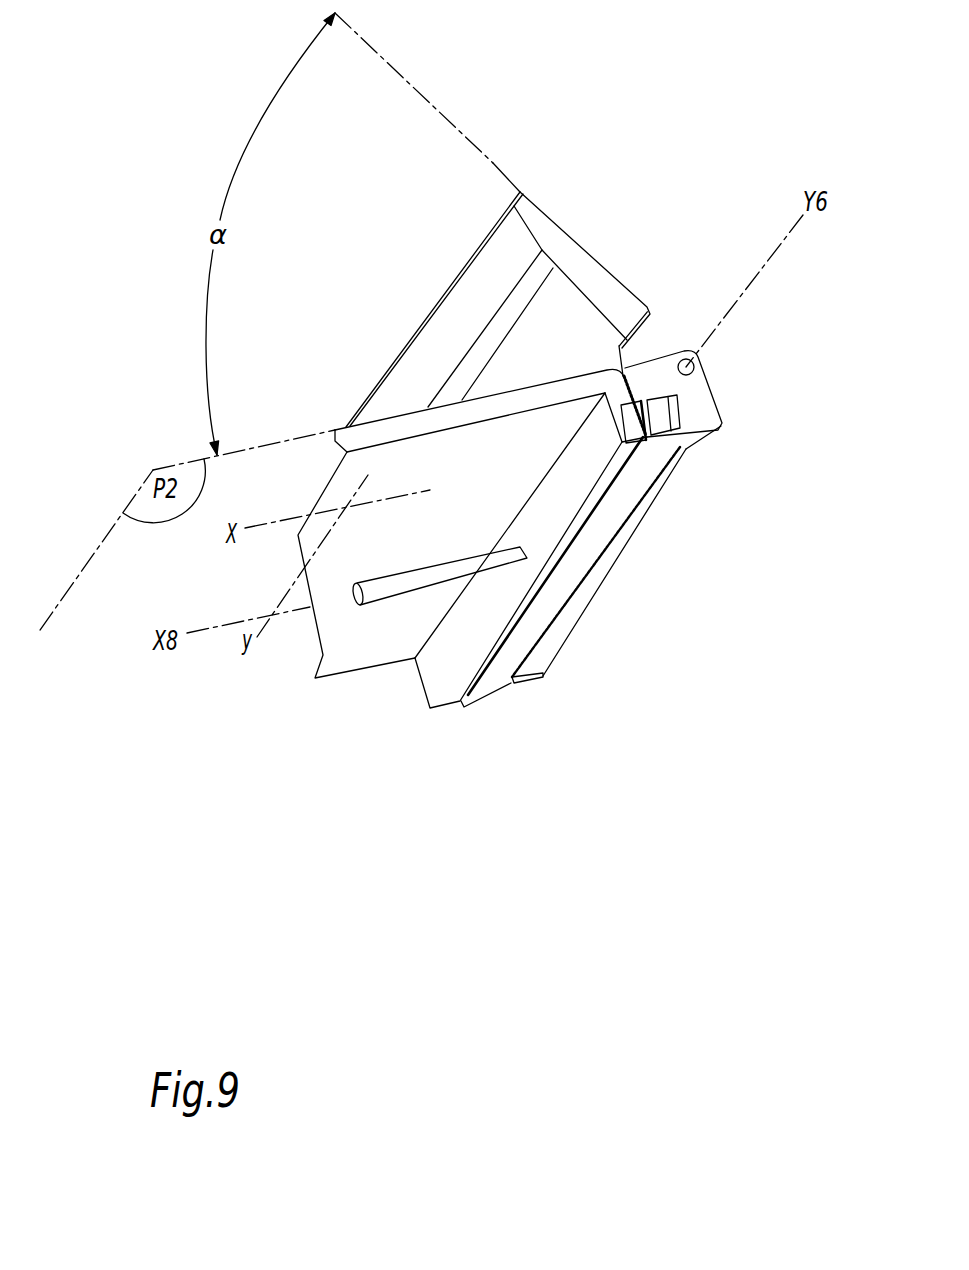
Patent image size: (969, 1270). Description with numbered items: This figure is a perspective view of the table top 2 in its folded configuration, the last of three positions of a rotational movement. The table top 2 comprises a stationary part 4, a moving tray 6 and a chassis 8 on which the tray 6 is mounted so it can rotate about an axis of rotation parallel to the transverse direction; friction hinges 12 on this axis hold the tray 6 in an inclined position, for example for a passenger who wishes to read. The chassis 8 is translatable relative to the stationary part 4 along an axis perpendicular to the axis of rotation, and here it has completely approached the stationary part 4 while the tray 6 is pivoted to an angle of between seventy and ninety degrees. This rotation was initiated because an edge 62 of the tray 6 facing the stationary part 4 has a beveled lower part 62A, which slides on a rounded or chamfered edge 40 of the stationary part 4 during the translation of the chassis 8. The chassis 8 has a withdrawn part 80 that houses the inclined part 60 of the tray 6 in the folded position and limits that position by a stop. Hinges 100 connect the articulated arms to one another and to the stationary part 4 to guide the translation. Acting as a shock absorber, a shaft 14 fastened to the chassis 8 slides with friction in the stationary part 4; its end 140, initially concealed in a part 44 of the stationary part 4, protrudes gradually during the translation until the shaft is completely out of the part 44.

The table top 2 is at (390, 252).
The stationary part 4 is at (377, 435).
The tray 6 is at (617, 290).
The chassis 8 is at (702, 416).
The friction hinges 12 is at (693, 364).
The shaft 14 is at (456, 575).
The edge 40 is at (628, 353).
The part 44 is at (437, 675).
The inclined part 60 is at (632, 538).
The edge 62 is at (490, 230).
The beveled lower part 62A is at (472, 308).
The withdrawn part 80 is at (570, 623).
The hinges 100 is at (652, 418).
The end 140 is at (352, 590).